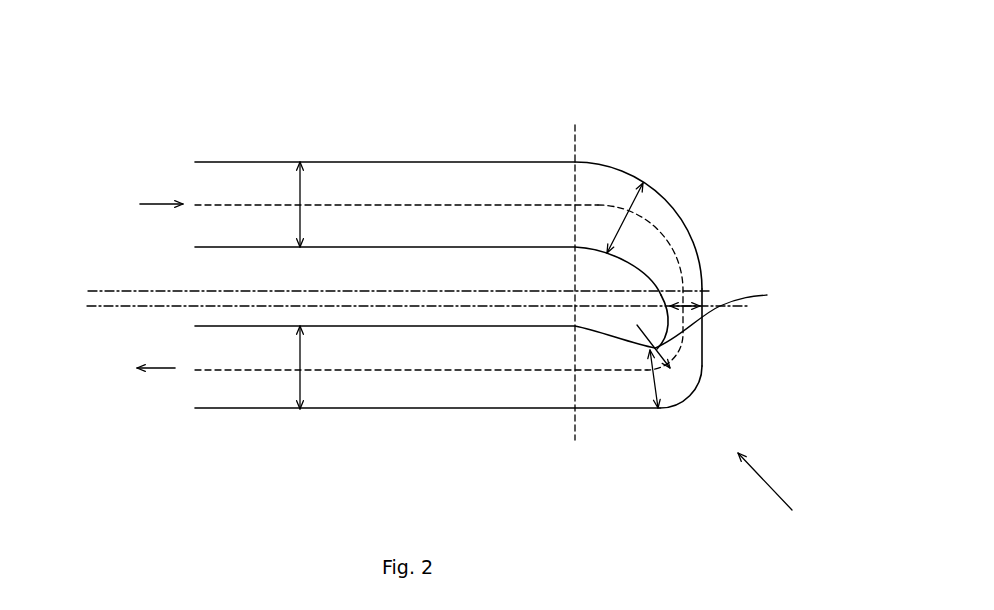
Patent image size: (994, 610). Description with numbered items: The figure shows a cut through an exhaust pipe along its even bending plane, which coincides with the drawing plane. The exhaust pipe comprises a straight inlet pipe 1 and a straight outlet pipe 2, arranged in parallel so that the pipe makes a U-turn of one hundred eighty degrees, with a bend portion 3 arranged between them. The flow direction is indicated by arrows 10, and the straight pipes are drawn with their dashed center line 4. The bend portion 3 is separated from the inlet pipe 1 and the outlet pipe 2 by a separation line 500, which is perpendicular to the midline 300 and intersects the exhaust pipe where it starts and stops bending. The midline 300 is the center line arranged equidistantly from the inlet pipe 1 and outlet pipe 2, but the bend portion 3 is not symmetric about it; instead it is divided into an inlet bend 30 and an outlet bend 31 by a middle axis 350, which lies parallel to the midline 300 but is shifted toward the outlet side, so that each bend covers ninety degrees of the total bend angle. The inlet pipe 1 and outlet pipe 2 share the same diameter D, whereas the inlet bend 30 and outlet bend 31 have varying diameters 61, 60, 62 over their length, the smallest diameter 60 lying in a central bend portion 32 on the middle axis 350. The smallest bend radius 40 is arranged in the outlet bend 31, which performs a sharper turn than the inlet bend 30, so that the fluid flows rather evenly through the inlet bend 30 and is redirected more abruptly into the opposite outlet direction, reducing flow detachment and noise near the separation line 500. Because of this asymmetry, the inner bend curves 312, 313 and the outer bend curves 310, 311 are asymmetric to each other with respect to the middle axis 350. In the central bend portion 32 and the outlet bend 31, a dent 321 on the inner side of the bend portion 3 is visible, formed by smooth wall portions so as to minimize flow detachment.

The inlet pipe 1 is at (213, 170).
The outlet pipe 2 is at (382, 395).
The bend portion 3 is at (775, 494).
The tube center line 4 is at (238, 205).
The arrows 10 is at (150, 204).
The inlet bend 30 is at (618, 203).
The outlet bend 31 is at (637, 410).
The central bend portion 32 is at (723, 320).
The smallest bend radius 40 is at (729, 317).
The smallest diameter 60 is at (702, 278).
The diameter 61 is at (633, 210).
The diameter 62 is at (650, 380).
The midline 300 is at (123, 291).
The outer bend curve 310 is at (605, 163).
The outer bend curve 311 is at (697, 368).
The inner bend curve 312 is at (602, 261).
The inner bend curve 313 is at (594, 325).
The dent 321 is at (640, 328).
The middle axis 350 is at (125, 305).
The separation line 500 is at (577, 128).
The diameter D is at (305, 200).